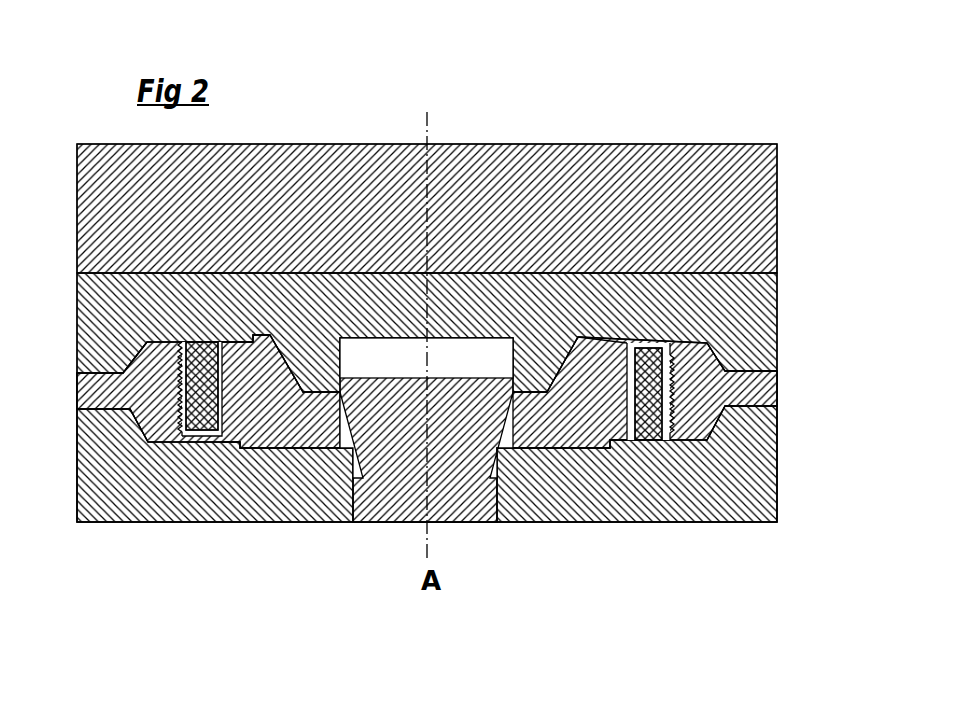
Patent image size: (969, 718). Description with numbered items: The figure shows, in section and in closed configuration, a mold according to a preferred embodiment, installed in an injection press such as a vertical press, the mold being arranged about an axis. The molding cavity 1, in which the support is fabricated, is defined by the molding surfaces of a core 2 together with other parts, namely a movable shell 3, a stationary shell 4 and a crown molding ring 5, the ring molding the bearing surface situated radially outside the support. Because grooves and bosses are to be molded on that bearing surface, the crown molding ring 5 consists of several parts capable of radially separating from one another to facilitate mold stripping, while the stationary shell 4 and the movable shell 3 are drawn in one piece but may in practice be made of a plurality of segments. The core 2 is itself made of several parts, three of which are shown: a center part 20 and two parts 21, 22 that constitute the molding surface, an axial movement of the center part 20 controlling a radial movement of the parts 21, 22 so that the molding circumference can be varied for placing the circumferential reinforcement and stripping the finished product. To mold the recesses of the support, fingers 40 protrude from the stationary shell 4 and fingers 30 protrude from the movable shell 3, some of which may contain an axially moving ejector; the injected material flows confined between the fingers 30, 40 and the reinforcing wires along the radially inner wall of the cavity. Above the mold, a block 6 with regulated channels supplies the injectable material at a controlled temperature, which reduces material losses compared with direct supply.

The molding cavity 1 is at (434, 371).
The core 2 is at (598, 85).
The movable shell 3 is at (757, 470).
The stationary shell 4 is at (122, 327).
The crown molding ring 5 is at (85, 397).
The block with regulated channels 6 is at (758, 178).
The center part 20 is at (392, 407).
The core part 21 is at (253, 373).
The core part 22 is at (592, 362).
The fingers 30 is at (653, 365).
The fingers 40 is at (203, 402).